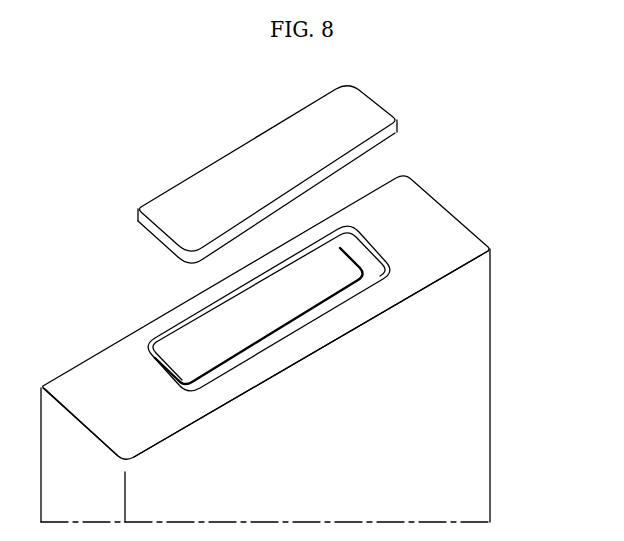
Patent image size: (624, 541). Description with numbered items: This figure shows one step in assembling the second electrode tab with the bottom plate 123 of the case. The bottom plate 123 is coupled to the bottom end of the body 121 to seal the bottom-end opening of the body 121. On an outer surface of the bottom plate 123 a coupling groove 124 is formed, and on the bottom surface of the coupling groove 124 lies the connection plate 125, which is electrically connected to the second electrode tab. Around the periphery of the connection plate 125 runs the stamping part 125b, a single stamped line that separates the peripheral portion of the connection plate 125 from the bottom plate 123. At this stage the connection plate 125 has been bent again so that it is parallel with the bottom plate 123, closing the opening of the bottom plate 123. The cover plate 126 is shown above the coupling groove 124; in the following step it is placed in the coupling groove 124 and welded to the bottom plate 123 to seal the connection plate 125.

The body 121 is at (475, 369).
The bottom plate 123 is at (460, 227).
The coupling groove 124 is at (389, 257).
The connection plate 125 is at (224, 321).
The stamping part 125b is at (197, 384).
The cover plate 126 is at (240, 165).